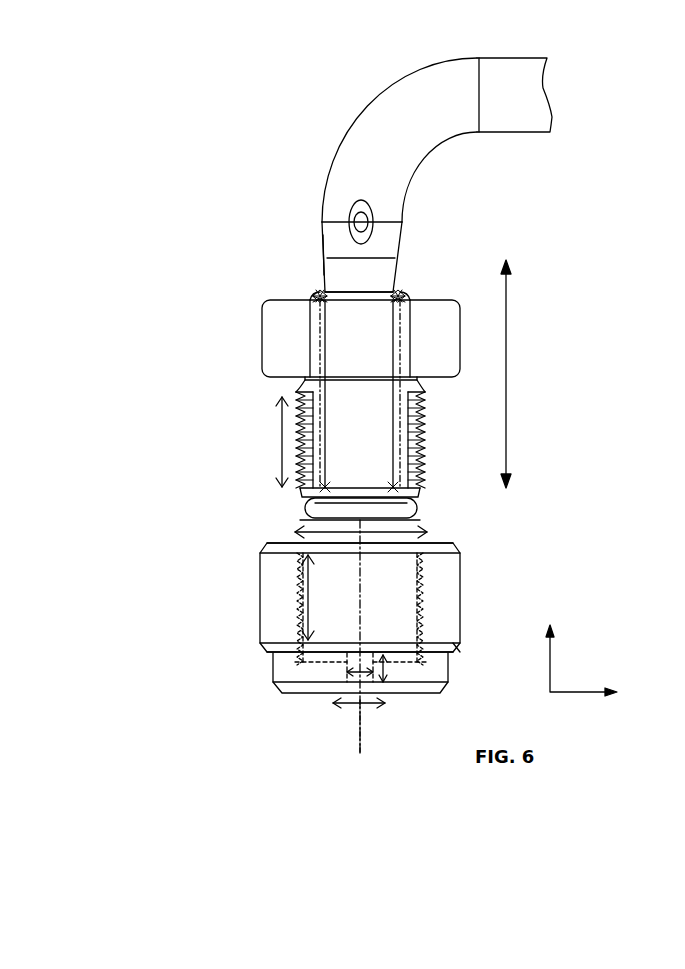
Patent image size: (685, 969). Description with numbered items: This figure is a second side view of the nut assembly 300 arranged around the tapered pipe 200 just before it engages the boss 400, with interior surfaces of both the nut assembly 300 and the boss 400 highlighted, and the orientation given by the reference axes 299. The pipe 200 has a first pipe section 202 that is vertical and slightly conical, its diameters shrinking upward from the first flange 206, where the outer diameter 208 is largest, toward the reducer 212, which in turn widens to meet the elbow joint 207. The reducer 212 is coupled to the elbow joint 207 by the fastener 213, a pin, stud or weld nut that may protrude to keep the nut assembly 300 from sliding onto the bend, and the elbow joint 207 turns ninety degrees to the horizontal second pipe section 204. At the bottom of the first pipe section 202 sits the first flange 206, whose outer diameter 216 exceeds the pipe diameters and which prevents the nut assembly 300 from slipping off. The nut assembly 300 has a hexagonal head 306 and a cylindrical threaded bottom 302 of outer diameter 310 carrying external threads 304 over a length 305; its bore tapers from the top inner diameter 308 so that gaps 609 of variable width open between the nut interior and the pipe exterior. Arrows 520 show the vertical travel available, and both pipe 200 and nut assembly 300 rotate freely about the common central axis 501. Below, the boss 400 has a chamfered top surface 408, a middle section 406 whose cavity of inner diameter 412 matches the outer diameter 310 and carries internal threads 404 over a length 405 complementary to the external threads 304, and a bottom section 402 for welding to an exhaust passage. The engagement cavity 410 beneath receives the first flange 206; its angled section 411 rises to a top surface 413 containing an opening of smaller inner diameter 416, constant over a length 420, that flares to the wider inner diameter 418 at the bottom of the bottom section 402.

The pipe 200 is at (250, 88).
The first pipe section 202 is at (400, 268).
The second pipe section 204 is at (513, 118).
The elbow joint 207 is at (340, 140).
The fastener 213 is at (364, 220).
The reducer 212 is at (322, 242).
The nut assembly 300 is at (245, 278).
The head 306 is at (262, 338).
The gaps 609 is at (316, 293).
The inner diameter 308 is at (343, 290).
The threaded bottom 302 is at (455, 391).
The external threads 304 is at (427, 417).
The length 305 is at (282, 460).
The outer diameter 208 is at (377, 487).
The outer diameter 216 is at (338, 508).
The first flange 206 is at (420, 517).
The outer diameter 310 is at (330, 535).
The arrows 520 is at (506, 377).
The boss 400 is at (512, 503).
The middle section 406 is at (260, 597).
The top surface 408 is at (445, 543).
The internal threads 404 is at (422, 597).
The length 405 is at (308, 590).
The bottom section 402 is at (450, 670).
The top surface 413 is at (335, 655).
The inner diameter 412 is at (390, 642).
The engagement cavity 410 is at (297, 653).
The inner diameter 416 is at (352, 677).
The angled section 411 is at (398, 663).
The length 420 is at (383, 665).
The inner diameter 418 is at (368, 705).
The common central axis 501 is at (353, 717).
The reference axes 299 is at (614, 613).